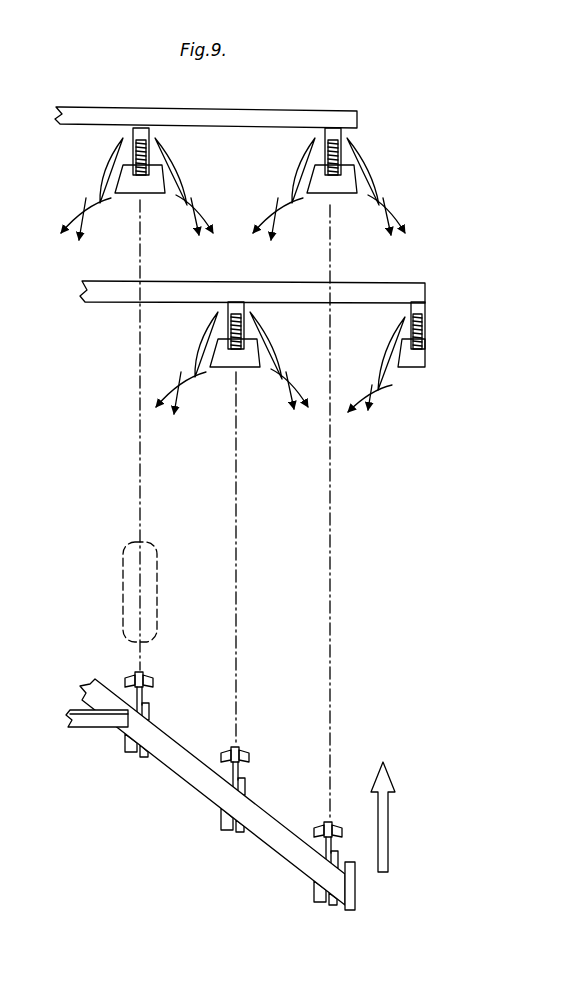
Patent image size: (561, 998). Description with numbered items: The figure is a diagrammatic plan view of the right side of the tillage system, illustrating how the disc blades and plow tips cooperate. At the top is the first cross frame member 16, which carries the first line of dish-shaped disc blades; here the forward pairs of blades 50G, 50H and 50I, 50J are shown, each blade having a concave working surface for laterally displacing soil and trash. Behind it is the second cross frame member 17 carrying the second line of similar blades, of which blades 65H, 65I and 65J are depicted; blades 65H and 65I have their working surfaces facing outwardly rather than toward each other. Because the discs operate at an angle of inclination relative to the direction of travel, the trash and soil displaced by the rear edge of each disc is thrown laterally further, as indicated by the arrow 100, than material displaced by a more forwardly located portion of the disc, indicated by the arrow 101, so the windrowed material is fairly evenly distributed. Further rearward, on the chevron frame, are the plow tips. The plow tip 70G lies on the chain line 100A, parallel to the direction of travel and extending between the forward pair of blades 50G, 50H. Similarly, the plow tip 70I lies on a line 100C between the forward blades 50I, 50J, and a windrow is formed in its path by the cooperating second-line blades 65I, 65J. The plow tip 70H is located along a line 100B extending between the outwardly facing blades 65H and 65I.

The first cross frame member 16 is at (262, 107).
The second cross frame member 17 is at (417, 282).
The disc blade 50G is at (122, 156).
The disc blade 50H is at (165, 156).
The disc blade 50I is at (308, 156).
The disc blade 50J is at (355, 155).
The disc blade 65H is at (217, 333).
The disc blade 65I is at (262, 338).
The disc blade 65J is at (393, 383).
The arrow 100 is at (86, 200).
The arrow 101 is at (84, 214).
The chain line 100A is at (140, 467).
The line 100B is at (236, 505).
The line 100C is at (332, 471).
The plow tip 70G is at (153, 700).
The plow tip 70H is at (253, 768).
The plow tip 70I is at (338, 808).